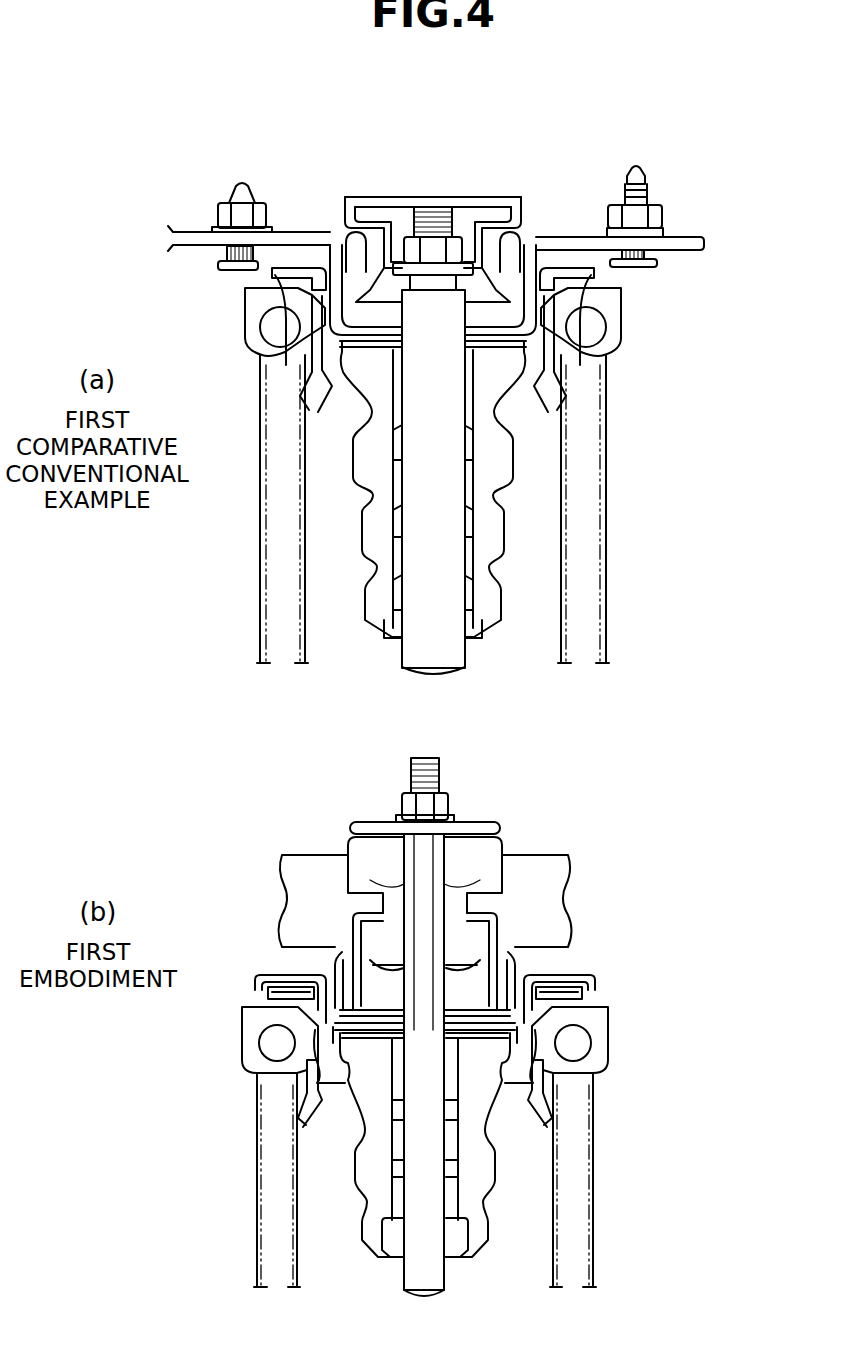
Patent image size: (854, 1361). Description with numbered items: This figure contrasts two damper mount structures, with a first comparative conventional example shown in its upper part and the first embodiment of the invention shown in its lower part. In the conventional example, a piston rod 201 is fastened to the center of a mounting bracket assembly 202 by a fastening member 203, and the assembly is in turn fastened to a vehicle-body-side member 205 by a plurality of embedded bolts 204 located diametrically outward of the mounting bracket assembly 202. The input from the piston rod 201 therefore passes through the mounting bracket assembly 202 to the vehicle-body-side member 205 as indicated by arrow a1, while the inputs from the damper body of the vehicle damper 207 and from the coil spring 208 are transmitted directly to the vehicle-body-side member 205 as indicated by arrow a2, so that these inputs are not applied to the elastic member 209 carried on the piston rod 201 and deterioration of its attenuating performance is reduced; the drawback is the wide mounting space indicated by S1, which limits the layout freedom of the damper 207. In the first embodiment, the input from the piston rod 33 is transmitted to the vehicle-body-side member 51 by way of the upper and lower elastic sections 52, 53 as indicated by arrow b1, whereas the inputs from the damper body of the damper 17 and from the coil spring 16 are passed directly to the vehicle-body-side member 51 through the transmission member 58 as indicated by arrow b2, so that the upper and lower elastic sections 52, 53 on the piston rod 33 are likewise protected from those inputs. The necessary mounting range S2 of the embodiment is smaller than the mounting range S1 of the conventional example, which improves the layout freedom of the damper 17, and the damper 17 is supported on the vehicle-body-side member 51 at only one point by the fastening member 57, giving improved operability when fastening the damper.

The piston rod 201 is at (460, 412).
The mounting bracket assembly 202 is at (532, 222).
The fastening member 203 is at (437, 245).
The embedded bolts 204 is at (243, 190).
The vehicle-body-side member 205 is at (692, 230).
The vehicle damper 207 is at (534, 530).
The coil spring 208 is at (613, 380).
The elastic member 209 is at (499, 222).
The coil spring 16 is at (596, 1075).
The damper 17 is at (531, 1174).
The piston rod 33 is at (432, 1195).
The vehicle-body-side member 51 is at (304, 851).
The upper elastic section 52 is at (489, 847).
The lower elastic section 53 is at (479, 920).
The fastening member 57 is at (431, 808).
The transmission member 58 is at (480, 994).
The mounting range S1 is at (663, 228).
The mounting range S2 is at (507, 837).
The arrow a1 is at (496, 255).
The arrow a2 is at (274, 283).
The arrow b1 is at (523, 867).
The arrow b2 is at (343, 952).